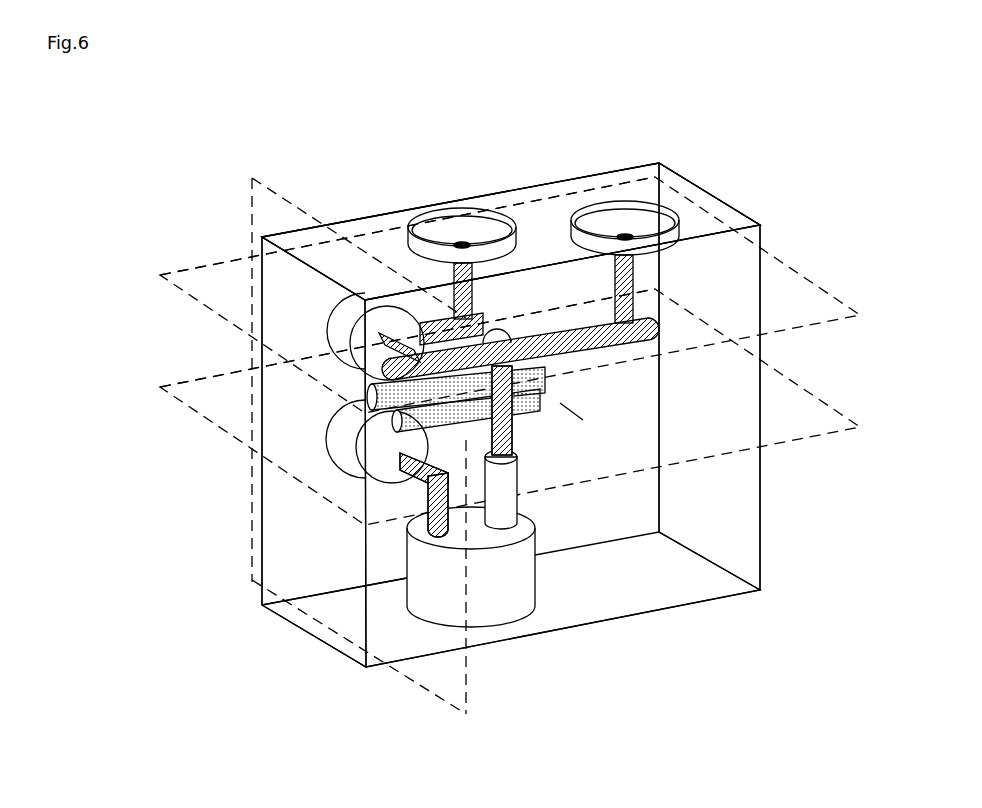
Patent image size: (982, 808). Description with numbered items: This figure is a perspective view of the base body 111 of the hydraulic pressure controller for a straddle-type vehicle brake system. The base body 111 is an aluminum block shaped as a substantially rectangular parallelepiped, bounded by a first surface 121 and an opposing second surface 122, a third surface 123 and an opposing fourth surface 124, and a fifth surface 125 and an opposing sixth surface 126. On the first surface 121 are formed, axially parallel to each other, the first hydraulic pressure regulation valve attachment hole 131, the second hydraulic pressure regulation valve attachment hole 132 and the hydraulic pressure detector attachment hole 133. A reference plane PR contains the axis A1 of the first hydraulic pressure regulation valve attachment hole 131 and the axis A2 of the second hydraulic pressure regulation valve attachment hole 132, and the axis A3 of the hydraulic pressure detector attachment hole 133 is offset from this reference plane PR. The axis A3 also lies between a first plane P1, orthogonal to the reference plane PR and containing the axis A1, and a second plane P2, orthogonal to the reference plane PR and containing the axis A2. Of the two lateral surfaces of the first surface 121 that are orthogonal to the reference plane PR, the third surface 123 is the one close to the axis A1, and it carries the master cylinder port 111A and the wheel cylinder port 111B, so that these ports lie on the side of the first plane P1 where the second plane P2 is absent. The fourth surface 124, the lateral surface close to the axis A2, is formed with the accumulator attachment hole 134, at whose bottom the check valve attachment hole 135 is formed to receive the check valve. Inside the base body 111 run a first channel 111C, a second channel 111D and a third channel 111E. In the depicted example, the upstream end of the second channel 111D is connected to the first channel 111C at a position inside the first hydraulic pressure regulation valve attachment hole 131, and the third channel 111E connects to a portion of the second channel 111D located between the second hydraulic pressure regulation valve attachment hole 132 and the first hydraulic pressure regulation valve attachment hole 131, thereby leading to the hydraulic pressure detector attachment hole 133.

The base body 111 is at (598, 180).
The master cylinder port 111A is at (657, 178).
The wheel cylinder port 111B is at (450, 210).
The first channel 111C is at (650, 305).
The second channel 111D is at (428, 478).
The third channel 111E is at (505, 372).
The first surface 121 is at (272, 510).
The second surface 122 is at (750, 545).
The third surface 123 is at (730, 213).
The fourth surface 124 is at (728, 590).
The fifth surface 125 is at (750, 520).
The sixth surface 126 is at (347, 648).
The first hydraulic pressure regulation valve attachment hole 131 is at (332, 317).
The second hydraulic pressure regulation valve attachment hole 132 is at (335, 424).
The hydraulic pressure detector attachment hole 133 is at (533, 327).
The accumulator attachment hole 134 is at (510, 627).
The check valve attachment hole 135 is at (503, 523).
The reference plane PR is at (283, 201).
The first plane P1 is at (172, 270).
The second plane P2 is at (172, 381).
The axis of the first hydraulic pressure regulation valve attachment hole A1 is at (255, 257).
The axis of the second hydraulic pressure regulation valve attachment hole A2 is at (252, 367).
The axis of the hydraulic pressure detector attachment hole A3 is at (560, 405).